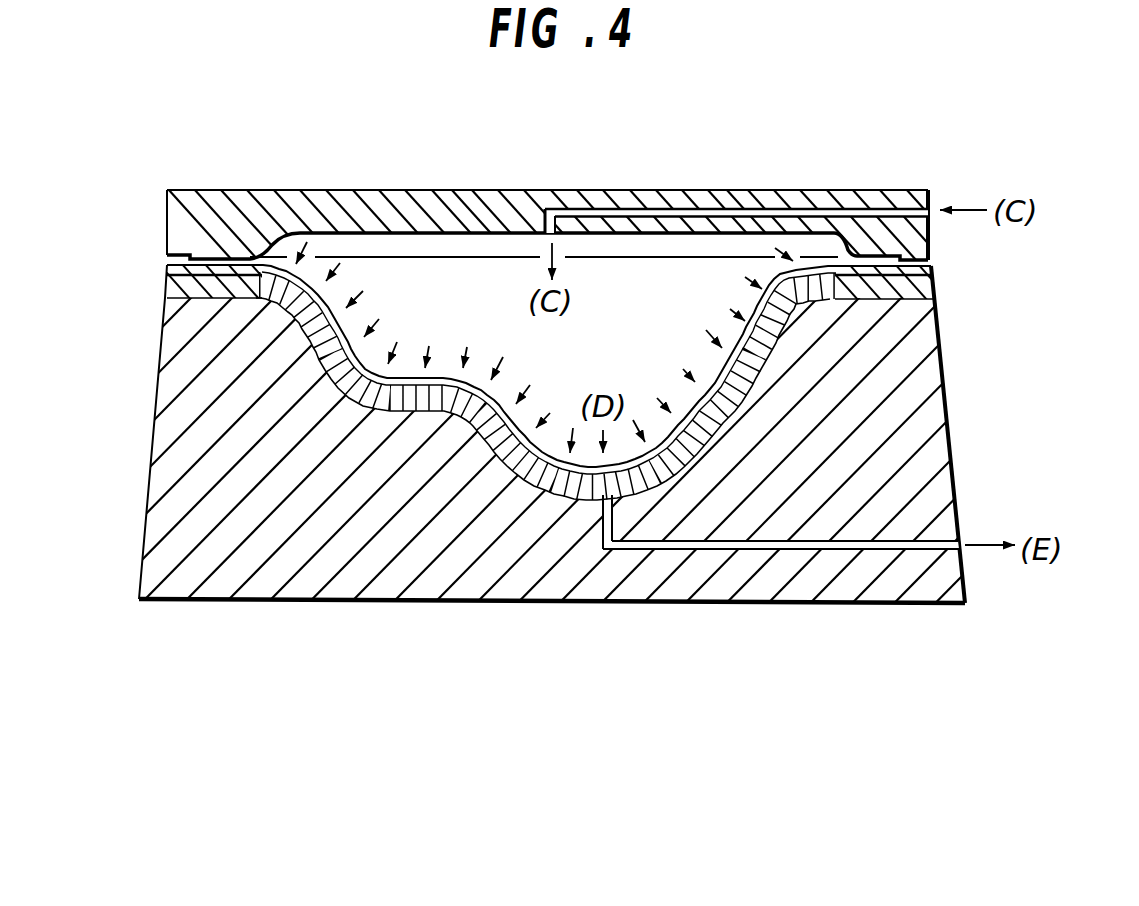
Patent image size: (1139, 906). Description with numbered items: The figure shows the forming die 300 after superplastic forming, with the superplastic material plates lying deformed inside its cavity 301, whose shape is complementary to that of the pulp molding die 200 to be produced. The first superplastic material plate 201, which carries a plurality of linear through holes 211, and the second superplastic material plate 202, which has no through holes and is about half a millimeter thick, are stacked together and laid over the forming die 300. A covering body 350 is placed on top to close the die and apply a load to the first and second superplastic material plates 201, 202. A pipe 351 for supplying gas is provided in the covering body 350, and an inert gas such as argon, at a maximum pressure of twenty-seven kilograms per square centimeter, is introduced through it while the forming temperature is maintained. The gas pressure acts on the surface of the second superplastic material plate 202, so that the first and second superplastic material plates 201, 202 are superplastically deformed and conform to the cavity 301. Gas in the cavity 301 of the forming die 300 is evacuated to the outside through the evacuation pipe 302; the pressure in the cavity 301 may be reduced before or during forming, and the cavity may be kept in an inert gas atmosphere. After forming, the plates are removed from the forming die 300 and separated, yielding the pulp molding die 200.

The covering body 350 is at (438, 202).
The pipe for supplying gas 351 is at (785, 208).
The second superplastic material plate 202 is at (931, 271).
The pulp molding die 200 is at (918, 288).
The first superplastic material plate 201 is at (963, 333).
The forming die 300 is at (228, 570).
The cavity 301 is at (640, 358).
The evacuation pipe 302 is at (960, 549).
The linear through holes 211 is at (528, 549).